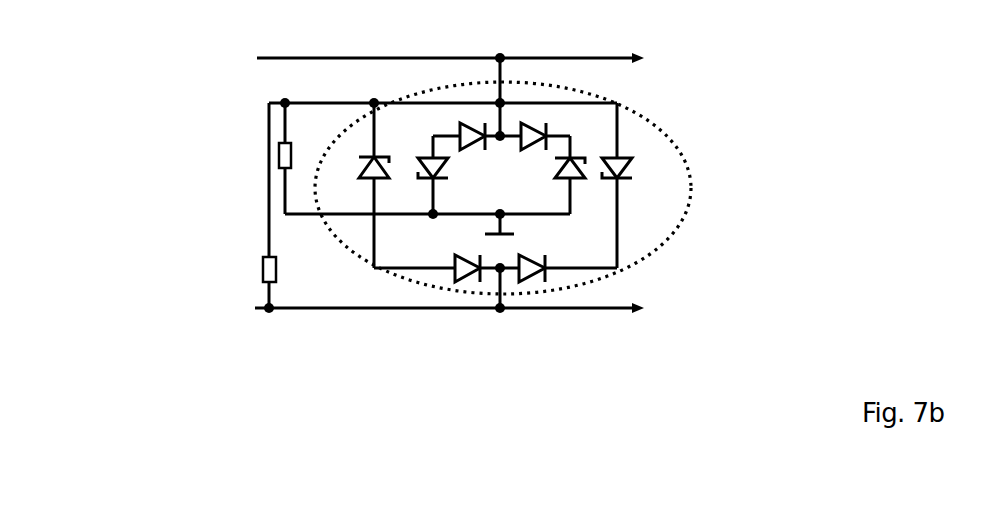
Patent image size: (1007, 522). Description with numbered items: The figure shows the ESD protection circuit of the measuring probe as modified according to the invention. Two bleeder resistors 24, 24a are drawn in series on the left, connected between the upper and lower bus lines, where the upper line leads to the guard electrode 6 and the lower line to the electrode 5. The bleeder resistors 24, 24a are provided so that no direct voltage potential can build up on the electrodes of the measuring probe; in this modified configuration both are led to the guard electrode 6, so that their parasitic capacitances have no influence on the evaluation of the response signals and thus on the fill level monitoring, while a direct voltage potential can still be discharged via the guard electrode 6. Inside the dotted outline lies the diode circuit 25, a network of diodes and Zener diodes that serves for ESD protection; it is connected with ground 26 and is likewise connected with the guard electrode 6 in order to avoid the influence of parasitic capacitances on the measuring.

The measuring electrode 5 is at (534, 308).
The guard electrode 6 is at (529, 57).
The bleeder resistor 24 is at (278, 156).
The bleeder resistor 24a is at (264, 271).
The diode circuit 25 is at (668, 137).
The ground 26 is at (534, 233).